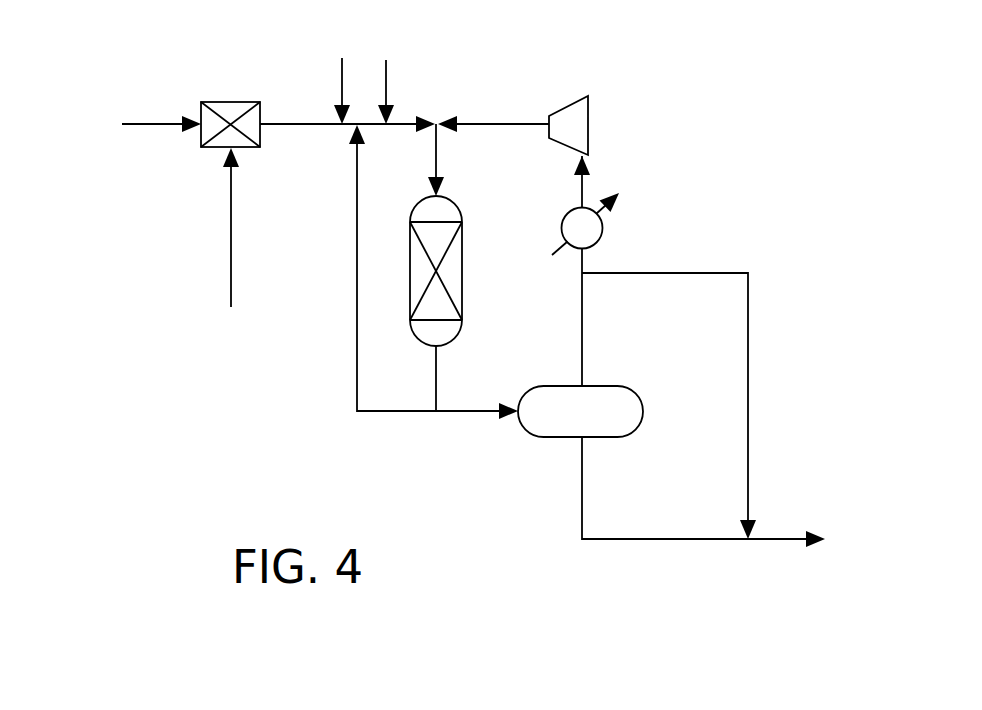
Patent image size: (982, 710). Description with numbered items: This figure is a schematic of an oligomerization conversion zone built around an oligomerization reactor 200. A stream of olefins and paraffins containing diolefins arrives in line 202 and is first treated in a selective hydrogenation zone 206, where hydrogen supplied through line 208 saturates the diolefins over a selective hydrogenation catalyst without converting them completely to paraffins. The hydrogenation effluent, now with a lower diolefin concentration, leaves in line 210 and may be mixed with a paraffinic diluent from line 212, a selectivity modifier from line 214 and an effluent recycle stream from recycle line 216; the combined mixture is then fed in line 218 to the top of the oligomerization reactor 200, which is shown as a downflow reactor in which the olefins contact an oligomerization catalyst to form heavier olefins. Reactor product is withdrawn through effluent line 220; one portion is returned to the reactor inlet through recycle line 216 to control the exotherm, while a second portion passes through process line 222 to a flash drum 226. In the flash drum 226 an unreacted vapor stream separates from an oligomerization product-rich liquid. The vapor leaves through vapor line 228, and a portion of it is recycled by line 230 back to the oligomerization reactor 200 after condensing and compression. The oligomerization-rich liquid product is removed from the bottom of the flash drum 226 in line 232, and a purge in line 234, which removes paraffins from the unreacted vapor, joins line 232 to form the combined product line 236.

The oligomerization reactor 200 is at (462, 278).
The line 202 is at (152, 125).
The selective hydrogenation zone 206 is at (258, 147).
The line 208 is at (231, 223).
The line 210 is at (320, 125).
The line 212 is at (342, 90).
The line 214 is at (419, 67).
The recycle line 216 is at (357, 332).
The line 218 is at (436, 148).
The effluent line 220 is at (436, 368).
The process line 222 is at (500, 413).
The flash drum 226 is at (628, 386).
The vapor line 228 is at (583, 318).
The line 230 is at (510, 124).
The line 232 is at (582, 498).
The line 234 is at (657, 273).
The line 236 is at (777, 539).